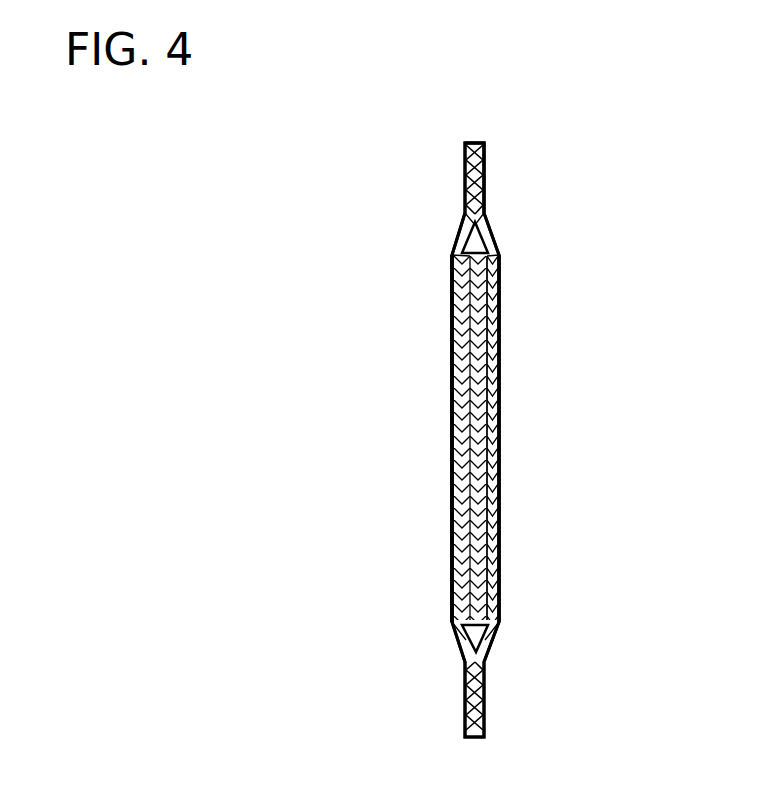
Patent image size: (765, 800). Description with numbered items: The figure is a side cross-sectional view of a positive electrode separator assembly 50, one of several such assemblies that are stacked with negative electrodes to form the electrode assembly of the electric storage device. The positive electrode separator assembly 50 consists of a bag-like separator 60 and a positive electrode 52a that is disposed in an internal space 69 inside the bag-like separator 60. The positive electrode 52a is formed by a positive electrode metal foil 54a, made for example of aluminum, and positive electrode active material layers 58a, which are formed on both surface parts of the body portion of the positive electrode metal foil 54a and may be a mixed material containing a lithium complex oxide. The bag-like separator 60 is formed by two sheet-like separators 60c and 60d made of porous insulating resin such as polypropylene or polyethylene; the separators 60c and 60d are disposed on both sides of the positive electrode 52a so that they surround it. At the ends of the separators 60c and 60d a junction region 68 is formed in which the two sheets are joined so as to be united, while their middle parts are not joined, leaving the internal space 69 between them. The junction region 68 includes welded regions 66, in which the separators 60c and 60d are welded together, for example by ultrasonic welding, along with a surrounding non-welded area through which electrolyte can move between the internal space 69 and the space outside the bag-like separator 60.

The positive electrode separator assembly 50 is at (490, 96).
The positive electrode 52a is at (600, 320).
The positive electrode metal foil 54a is at (493, 330).
The positive electrode active material layers 58a is at (495, 378).
The bag-like separator 60 is at (340, 438).
The separator 60c is at (453, 452).
The separator 60d is at (455, 500).
The welded regions 66 is at (462, 196).
The junction region 68 is at (432, 201).
The internal space 69 is at (458, 238).